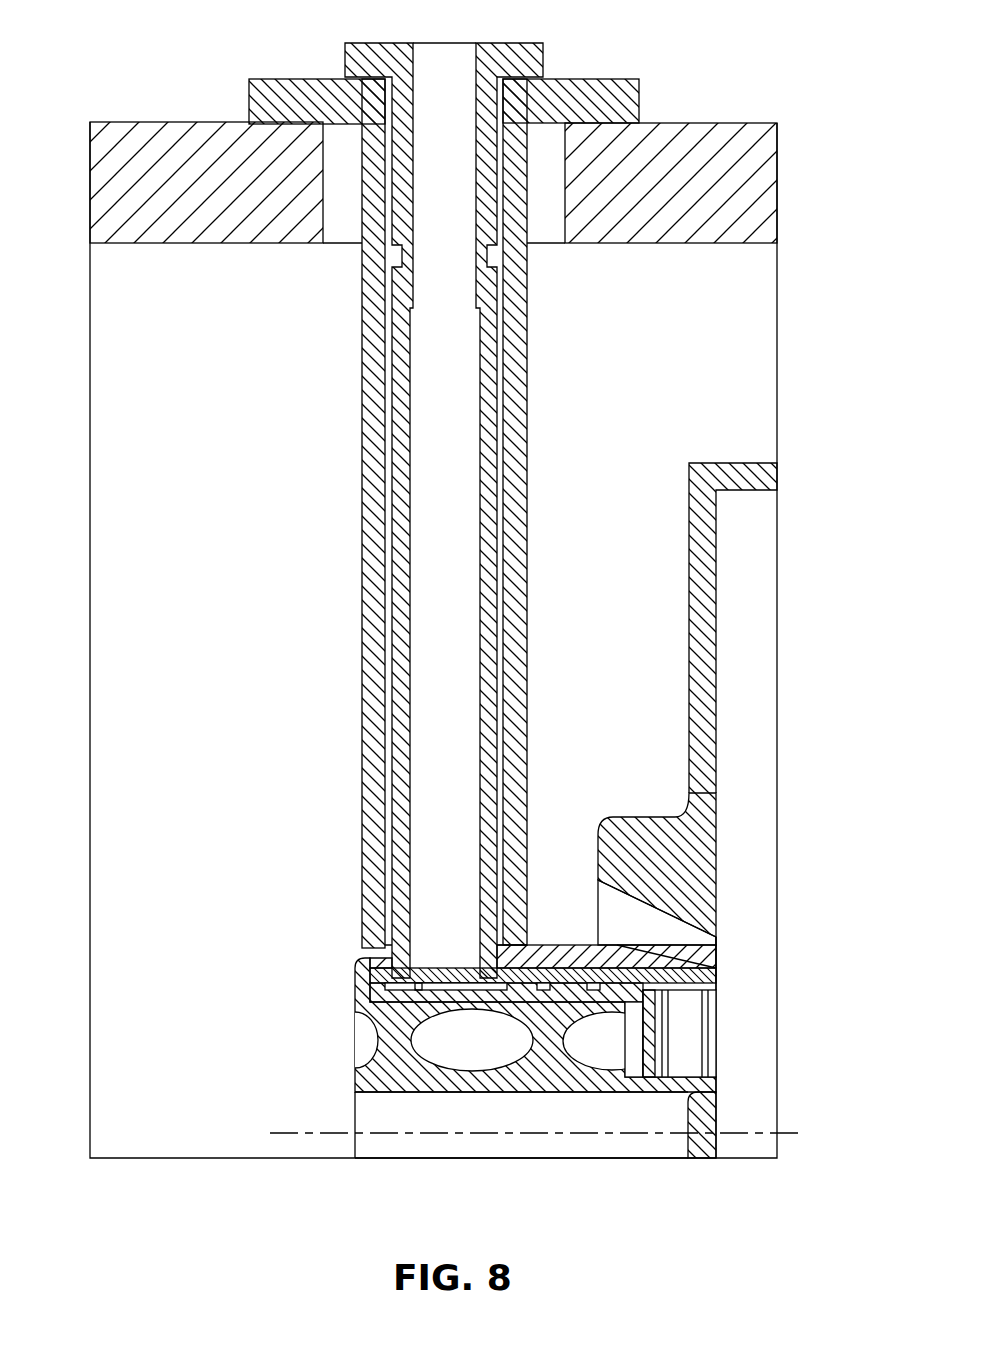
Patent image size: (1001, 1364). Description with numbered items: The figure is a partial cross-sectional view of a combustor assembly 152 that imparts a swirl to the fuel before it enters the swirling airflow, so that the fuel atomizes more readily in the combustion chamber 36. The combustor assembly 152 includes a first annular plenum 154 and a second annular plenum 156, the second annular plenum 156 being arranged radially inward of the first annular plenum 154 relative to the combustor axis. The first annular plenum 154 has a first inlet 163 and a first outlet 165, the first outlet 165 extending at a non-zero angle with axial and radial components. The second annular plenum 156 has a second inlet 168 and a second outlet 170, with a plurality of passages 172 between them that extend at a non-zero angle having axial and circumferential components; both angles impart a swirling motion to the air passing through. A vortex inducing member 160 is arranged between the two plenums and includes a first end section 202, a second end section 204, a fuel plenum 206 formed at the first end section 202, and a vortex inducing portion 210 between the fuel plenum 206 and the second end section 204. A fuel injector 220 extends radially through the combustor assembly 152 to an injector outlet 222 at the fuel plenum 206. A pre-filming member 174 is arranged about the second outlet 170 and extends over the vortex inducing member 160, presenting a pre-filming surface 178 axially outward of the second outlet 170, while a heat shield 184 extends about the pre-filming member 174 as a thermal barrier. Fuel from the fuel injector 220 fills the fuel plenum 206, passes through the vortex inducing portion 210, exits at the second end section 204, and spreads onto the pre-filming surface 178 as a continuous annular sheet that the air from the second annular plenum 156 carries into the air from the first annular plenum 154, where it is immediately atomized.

The combustor assembly 152 is at (115, 50).
The combustion chamber 36 is at (755, 590).
The fuel injector 220 is at (389, 484).
The first annular plenum 154 is at (588, 892).
The first inlet 163 is at (615, 933).
The pre-filming member 174 is at (685, 960).
The first outlet 165 is at (718, 943).
The second end section 204 is at (716, 980).
The first end section 202 is at (372, 987).
The fuel plenum 206 is at (435, 985).
The heat shield 184 is at (525, 945).
The second annular plenum 156 is at (348, 1022).
The plurality of passages 172 is at (498, 1062).
The vortex inducing member 160 is at (588, 1070).
The second outlet 170 is at (635, 1033).
The pre-filming surface 178 is at (703, 988).
The second inlet 168 is at (360, 1058).
The injector outlet 222 is at (410, 1012).
The vortex inducing portion 210 is at (477, 1070).